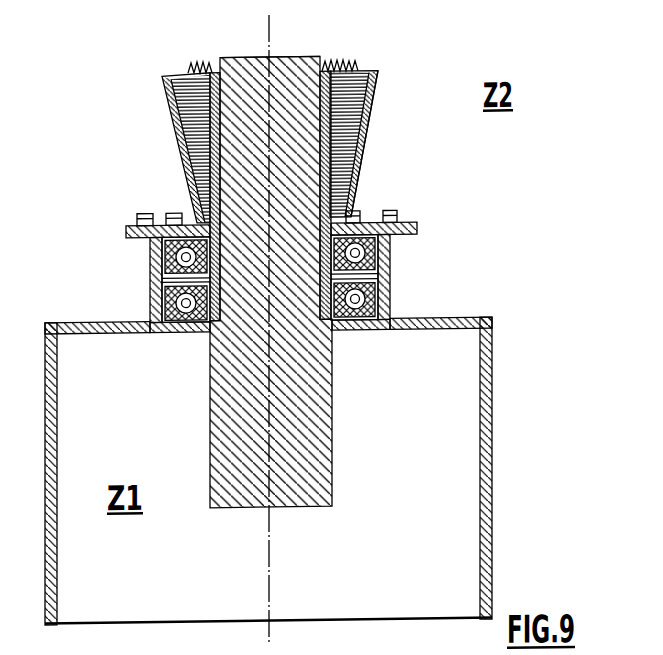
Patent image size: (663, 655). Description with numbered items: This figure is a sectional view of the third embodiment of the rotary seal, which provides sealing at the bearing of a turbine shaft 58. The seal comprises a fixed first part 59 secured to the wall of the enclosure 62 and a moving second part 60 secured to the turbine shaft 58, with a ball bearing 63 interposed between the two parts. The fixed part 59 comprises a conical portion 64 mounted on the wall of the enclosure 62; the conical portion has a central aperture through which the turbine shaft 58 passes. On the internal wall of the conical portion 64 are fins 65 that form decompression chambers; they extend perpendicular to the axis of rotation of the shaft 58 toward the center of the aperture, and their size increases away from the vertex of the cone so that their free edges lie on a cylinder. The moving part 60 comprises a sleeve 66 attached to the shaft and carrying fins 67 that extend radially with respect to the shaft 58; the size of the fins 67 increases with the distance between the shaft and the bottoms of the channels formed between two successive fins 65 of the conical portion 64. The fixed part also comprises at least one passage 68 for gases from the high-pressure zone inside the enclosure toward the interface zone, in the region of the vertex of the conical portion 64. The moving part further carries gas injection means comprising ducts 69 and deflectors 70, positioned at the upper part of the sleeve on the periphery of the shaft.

The turbine shaft 58 is at (313, 481).
The fixed first part 59 is at (364, 175).
The moving second part 60 is at (338, 335).
The enclosure 62 is at (433, 320).
The ball bearing 63 is at (381, 257).
The conical portion 64 is at (370, 91).
The fins 65 is at (363, 73).
The sleeve 66 is at (220, 105).
The fins 67 is at (165, 75).
The passage 68 is at (207, 334).
The ducts 69 is at (350, 69).
The deflectors 70 is at (196, 67).